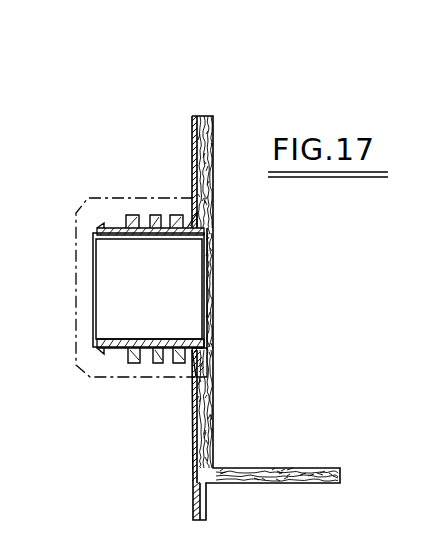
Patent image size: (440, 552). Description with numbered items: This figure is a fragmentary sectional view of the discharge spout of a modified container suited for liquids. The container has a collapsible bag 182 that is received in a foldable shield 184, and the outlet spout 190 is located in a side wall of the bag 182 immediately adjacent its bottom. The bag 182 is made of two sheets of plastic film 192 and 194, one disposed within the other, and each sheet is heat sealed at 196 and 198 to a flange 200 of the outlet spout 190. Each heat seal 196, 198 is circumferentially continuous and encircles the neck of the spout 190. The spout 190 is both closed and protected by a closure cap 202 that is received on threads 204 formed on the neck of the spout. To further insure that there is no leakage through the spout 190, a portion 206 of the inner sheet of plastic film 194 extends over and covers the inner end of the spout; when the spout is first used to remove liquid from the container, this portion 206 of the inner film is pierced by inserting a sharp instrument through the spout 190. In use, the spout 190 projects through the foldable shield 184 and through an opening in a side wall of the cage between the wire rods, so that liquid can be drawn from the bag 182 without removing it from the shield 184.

The collapsible bag 182 is at (214, 146).
The foldable shield 184 is at (194, 502).
The outlet spout 190 is at (127, 222).
The sheet of plastic film 192 is at (195, 152).
The inner sheet of plastic film 194 is at (212, 184).
The heat seal 196 is at (195, 197).
The heat seal 198 is at (214, 372).
The flange 200 is at (196, 373).
The closure cap 202 is at (76, 363).
The threads 204 is at (132, 366).
The portion of the inner sheet of plastic film 206 is at (204, 300).